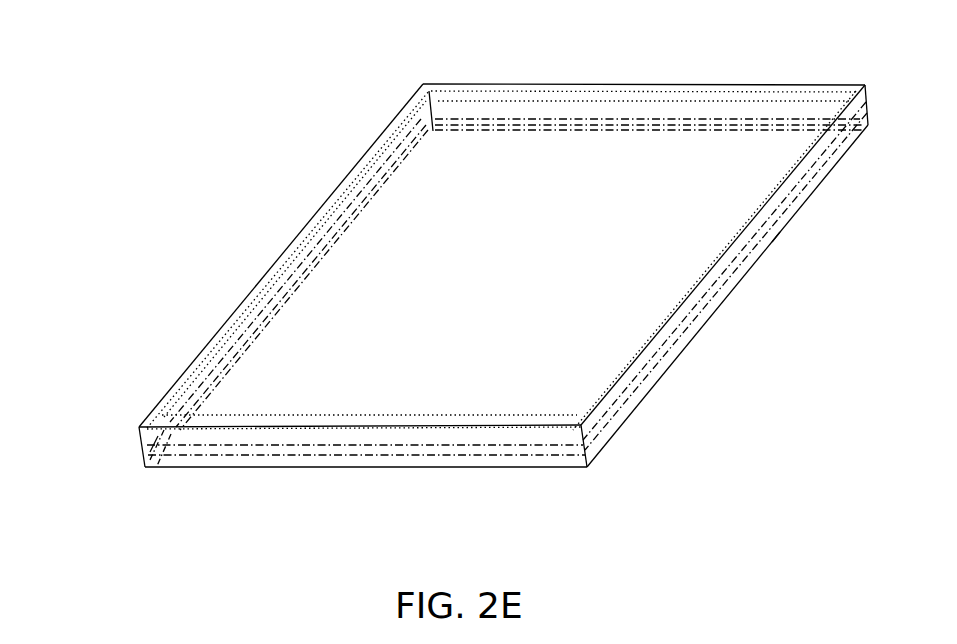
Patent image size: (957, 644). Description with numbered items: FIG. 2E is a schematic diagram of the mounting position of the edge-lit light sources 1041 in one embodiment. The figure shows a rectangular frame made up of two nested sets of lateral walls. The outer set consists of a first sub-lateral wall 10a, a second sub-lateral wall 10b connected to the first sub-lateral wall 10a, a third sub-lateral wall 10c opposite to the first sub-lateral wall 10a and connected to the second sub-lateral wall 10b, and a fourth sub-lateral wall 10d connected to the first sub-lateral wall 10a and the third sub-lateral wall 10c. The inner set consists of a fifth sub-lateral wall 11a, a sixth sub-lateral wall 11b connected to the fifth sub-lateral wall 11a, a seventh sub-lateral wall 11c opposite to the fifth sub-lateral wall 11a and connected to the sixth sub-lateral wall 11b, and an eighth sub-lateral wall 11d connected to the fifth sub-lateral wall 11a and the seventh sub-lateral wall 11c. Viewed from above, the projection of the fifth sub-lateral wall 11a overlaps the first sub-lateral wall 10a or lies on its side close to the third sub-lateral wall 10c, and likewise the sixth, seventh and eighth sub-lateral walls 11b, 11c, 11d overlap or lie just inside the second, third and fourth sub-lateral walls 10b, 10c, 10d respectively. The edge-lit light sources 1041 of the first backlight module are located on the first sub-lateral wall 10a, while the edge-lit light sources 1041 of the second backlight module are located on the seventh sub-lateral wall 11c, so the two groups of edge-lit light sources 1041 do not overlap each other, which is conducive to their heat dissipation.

The first sub-lateral wall 10a is at (257, 288).
The second sub-lateral wall 10b is at (480, 91).
The third sub-lateral wall 10c is at (800, 144).
The fourth sub-lateral wall 10d is at (268, 418).
The fifth sub-lateral wall 11a is at (333, 248).
The sixth sub-lateral wall 11b is at (683, 126).
The seventh sub-lateral wall 11c is at (627, 403).
The eighth sub-lateral wall 11d is at (493, 455).
The edge-lit light sources 1041 is at (185, 405).